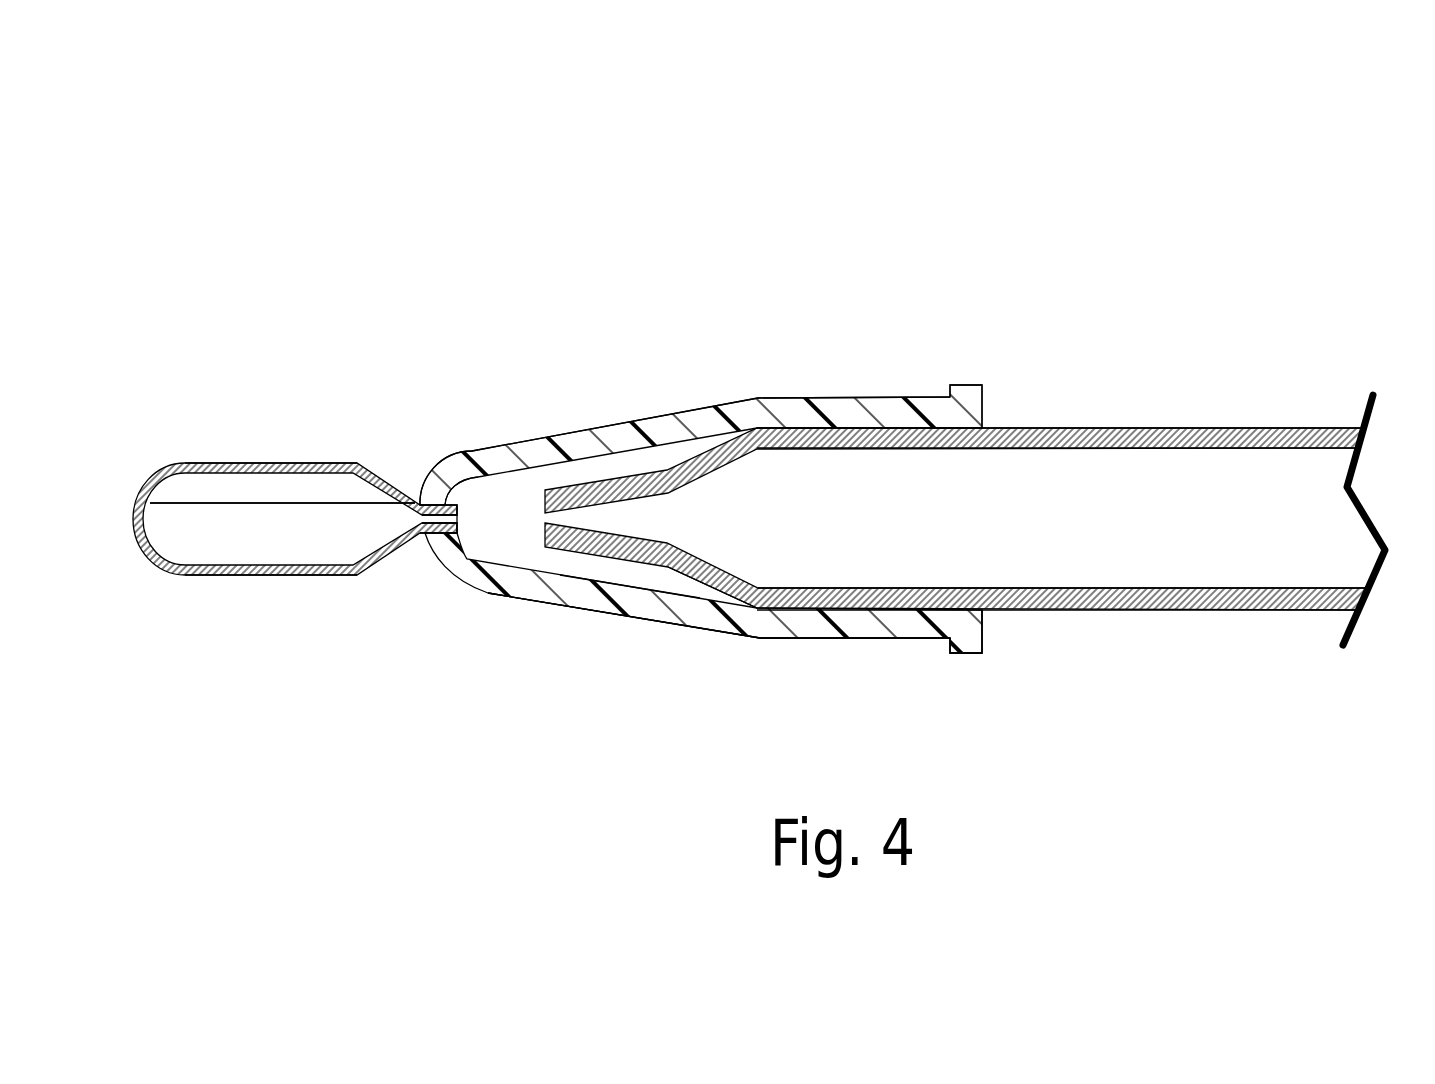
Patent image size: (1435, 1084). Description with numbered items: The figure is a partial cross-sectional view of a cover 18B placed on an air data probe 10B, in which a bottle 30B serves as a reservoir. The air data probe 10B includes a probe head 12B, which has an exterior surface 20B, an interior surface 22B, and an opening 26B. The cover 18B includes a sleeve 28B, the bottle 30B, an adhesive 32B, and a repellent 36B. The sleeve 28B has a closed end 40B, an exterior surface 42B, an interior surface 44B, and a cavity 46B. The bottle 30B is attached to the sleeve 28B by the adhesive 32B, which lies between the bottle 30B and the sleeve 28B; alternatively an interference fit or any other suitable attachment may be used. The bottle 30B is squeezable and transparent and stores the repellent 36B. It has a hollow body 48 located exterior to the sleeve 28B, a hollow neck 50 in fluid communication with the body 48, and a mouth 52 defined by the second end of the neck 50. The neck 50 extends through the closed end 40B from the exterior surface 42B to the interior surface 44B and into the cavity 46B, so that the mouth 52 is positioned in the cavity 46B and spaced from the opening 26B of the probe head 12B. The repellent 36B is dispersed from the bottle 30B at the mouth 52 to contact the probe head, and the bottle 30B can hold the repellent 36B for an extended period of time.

The air data probe 10B is at (920, 378).
The probe head 12B is at (1159, 474).
The cover 18B is at (701, 443).
The exterior surface 20B is at (1230, 610).
The interior surface 22B is at (1283, 588).
The opening 26B is at (543, 520).
The sleeve 28B is at (882, 628).
The bottle 30B is at (294, 458).
The adhesive 32B is at (427, 533).
The repellent 36B is at (168, 553).
The closed end 40B is at (432, 485).
The exterior surface 42B is at (678, 627).
The interior surface 44B is at (593, 582).
The cavity 46B is at (672, 585).
The body 48 is at (225, 575).
The neck 50 is at (432, 518).
The mouth 52 is at (457, 518).